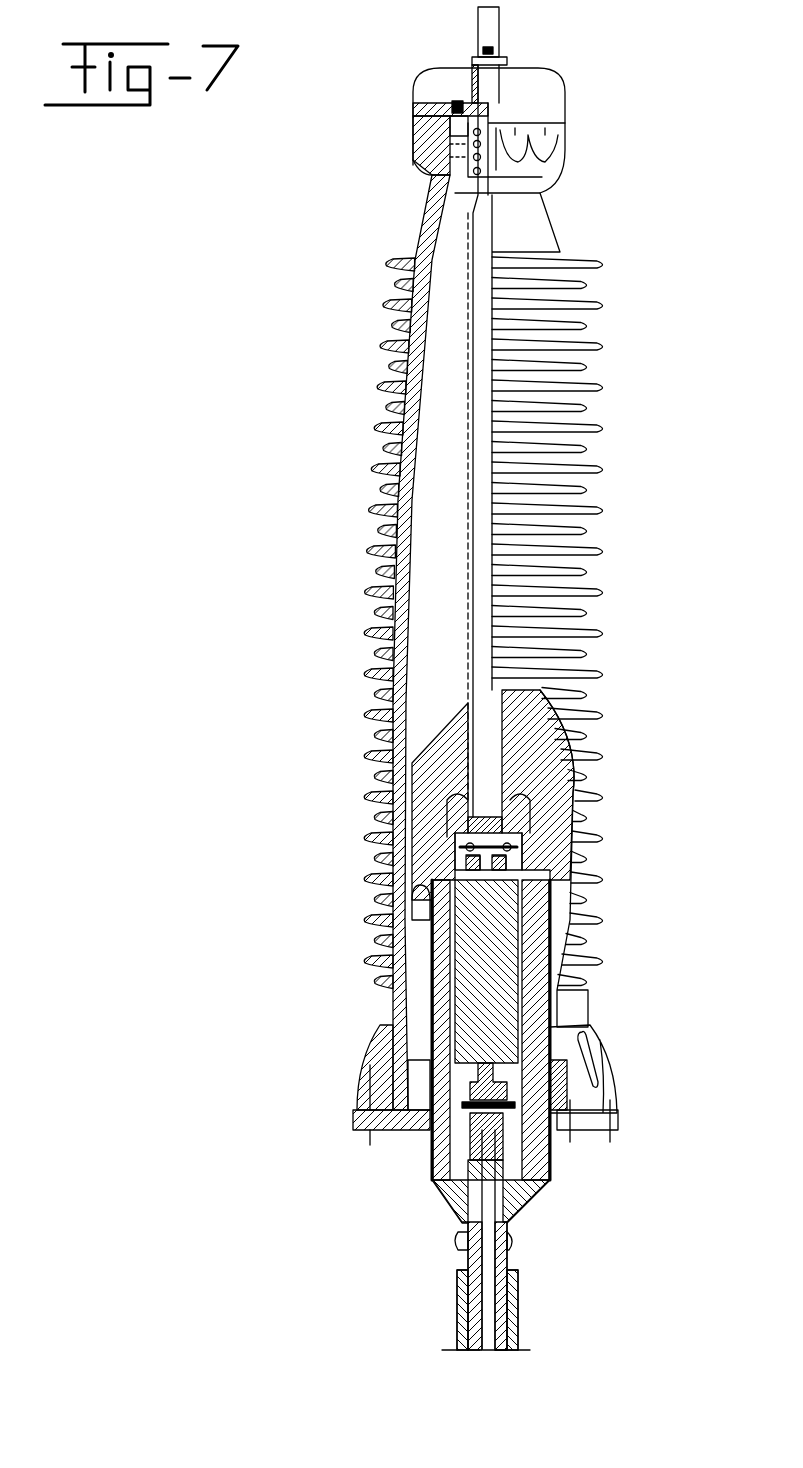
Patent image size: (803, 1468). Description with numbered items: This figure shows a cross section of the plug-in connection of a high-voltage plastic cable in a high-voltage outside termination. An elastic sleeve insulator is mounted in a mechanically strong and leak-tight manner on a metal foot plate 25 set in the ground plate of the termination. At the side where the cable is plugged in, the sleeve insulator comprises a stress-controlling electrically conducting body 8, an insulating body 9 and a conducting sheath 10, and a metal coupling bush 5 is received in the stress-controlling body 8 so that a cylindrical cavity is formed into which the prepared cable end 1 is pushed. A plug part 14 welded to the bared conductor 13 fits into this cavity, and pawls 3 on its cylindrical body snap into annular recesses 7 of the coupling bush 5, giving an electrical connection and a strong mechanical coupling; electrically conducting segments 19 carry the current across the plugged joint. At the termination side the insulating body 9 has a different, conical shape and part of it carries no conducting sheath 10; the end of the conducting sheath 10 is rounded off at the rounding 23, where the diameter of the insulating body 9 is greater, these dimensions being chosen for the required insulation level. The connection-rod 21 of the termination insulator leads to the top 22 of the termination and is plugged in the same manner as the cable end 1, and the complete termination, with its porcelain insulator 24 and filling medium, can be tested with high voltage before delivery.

The cable end 1 is at (458, 1182).
The pawls 3 is at (540, 860).
The coupling bush 5 is at (493, 965).
The annular recesses 7 is at (500, 848).
The stress-controlling electrically conducting body 8 is at (540, 815).
The insulating body 9 is at (545, 766).
The conducting sheath 10 is at (553, 1163).
The bared conductor 13 is at (492, 1182).
The plug part 14 is at (440, 880).
The electrically conducting segments 19 is at (545, 1063).
The connection-rod 21 is at (484, 500).
The top of the termination 22 is at (450, 153).
The rounding 23 is at (585, 884).
The porcelain insulator 24 is at (600, 503).
The metal foot plate 25 is at (607, 1082).